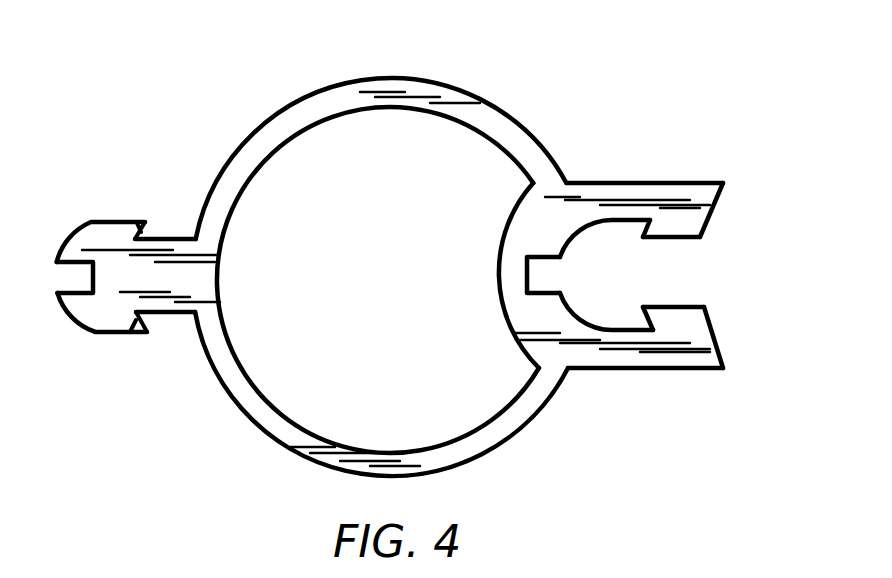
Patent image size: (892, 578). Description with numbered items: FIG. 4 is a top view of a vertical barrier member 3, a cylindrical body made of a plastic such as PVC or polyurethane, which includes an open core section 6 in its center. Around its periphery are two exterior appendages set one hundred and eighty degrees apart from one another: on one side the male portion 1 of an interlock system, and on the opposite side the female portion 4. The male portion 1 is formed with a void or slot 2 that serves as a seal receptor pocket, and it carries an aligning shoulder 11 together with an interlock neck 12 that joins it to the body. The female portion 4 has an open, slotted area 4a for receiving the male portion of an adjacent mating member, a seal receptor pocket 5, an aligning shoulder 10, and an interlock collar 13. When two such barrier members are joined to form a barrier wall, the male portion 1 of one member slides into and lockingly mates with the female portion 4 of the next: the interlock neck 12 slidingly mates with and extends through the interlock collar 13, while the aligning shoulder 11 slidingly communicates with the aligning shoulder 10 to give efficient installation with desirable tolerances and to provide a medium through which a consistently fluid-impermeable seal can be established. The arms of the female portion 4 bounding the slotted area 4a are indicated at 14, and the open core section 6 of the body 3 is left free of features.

The male portion 1 is at (91, 222).
The seal receptor pocket 2 is at (65, 280).
The barrier member 3 is at (485, 115).
The female portion 4 is at (680, 182).
The slotted area 4a is at (617, 303).
The seal receptor pocket 5 is at (550, 275).
The open core section 6 is at (332, 168).
The aligning shoulder 10 is at (640, 235).
The aligning shoulder 11 is at (137, 228).
The interlock neck 12 is at (187, 238).
The interlock collar 13 is at (688, 302).
The resilient prongs 14 is at (708, 212).